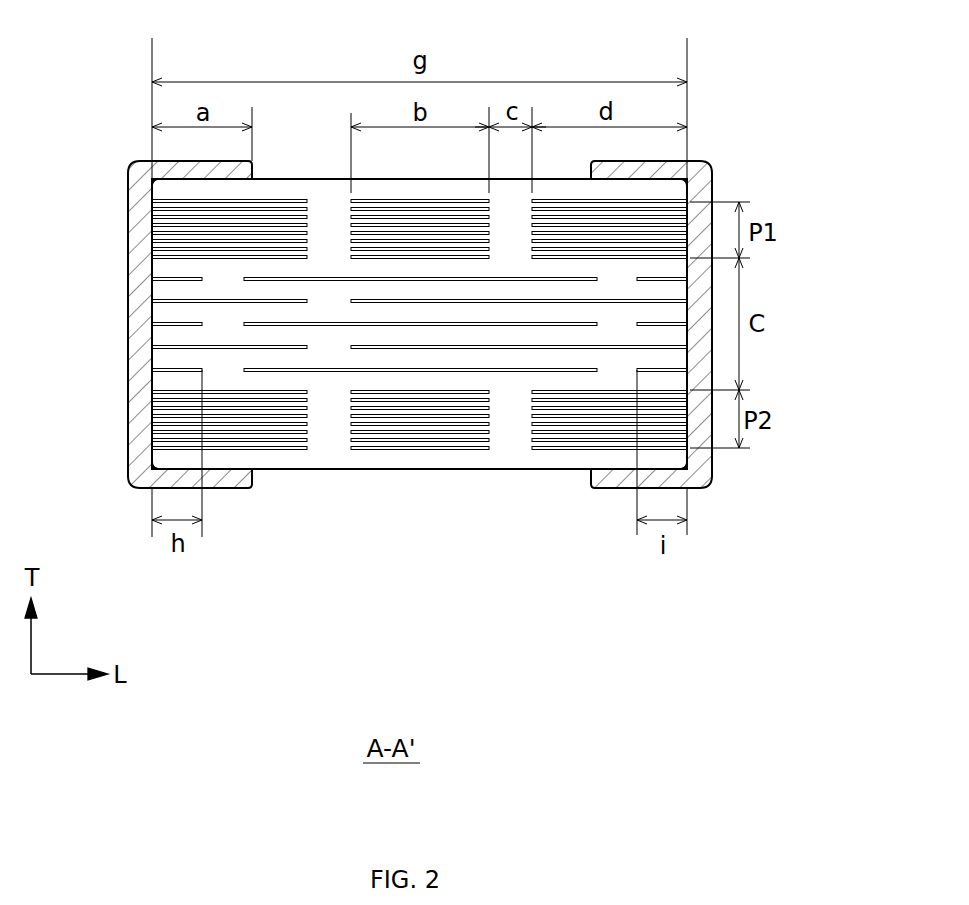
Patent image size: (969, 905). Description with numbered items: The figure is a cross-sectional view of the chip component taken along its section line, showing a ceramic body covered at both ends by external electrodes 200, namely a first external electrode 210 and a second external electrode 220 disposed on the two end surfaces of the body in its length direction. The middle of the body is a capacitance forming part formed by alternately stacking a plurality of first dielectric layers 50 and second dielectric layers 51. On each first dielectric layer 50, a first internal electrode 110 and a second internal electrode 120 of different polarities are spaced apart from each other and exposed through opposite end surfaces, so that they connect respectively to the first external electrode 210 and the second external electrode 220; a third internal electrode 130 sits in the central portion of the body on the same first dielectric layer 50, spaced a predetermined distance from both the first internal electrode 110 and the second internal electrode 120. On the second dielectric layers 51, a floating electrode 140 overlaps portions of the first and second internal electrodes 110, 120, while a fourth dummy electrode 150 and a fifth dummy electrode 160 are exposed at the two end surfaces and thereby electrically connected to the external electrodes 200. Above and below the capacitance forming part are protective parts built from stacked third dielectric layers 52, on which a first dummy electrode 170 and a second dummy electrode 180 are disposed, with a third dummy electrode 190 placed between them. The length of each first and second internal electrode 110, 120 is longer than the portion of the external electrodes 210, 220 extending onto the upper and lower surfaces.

The first dielectric layer 50 is at (437, 422).
The second dielectric layer 51 is at (172, 360).
The third dielectric layer 52 is at (358, 146).
The first internal electrode 110 is at (170, 348).
The second internal electrode 120 is at (658, 349).
The third internal electrode 130 is at (432, 347).
The floating electrode 140 is at (517, 323).
The fourth dummy electrode 150 is at (180, 325).
The fifth dummy electrode 160 is at (667, 323).
The first dummy electrode 170 is at (163, 233).
The second dummy electrode 180 is at (622, 200).
The third dummy electrode 190 is at (389, 200).
The external electrodes 200 is at (420, 425).
The first external electrode 210 is at (232, 484).
The second external electrode 220 is at (598, 402).